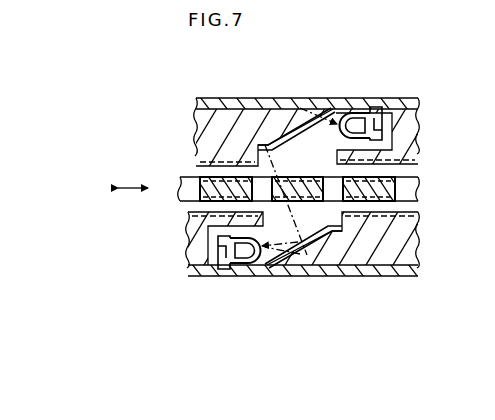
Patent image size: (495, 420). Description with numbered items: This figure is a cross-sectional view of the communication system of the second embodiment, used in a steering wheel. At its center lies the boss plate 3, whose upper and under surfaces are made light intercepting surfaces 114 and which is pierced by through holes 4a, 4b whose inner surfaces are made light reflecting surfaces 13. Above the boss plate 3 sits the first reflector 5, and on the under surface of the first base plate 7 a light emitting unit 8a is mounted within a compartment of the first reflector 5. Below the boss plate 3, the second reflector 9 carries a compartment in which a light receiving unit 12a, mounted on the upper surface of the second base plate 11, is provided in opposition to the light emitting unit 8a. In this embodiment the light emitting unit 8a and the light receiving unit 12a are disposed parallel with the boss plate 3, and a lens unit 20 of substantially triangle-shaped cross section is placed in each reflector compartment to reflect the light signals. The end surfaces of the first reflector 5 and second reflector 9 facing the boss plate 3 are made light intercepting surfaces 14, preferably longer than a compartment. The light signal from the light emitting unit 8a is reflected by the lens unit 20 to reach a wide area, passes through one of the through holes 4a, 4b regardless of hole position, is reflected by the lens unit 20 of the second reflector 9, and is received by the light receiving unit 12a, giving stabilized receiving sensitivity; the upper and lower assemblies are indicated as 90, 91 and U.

The boss plate 3 is at (412, 187).
The first reflector 5 is at (410, 135).
The first base plate 7 is at (405, 99).
The light emitting unit 8a is at (353, 109).
The second reflector 9 is at (410, 244).
The second base plate 11 is at (388, 276).
The light receiving unit 12a is at (242, 262).
The light reflecting surface 13 is at (326, 203).
The light intercepting surface 14 is at (201, 163).
The light intercepting surface 114 is at (200, 176).
The lens unit 20 is at (270, 101).
The through hole 4a is at (286, 167).
The through hole 4b is at (316, 167).
The upper unit 90 is at (329, 69).
The lower unit 91 is at (237, 309).
The unit U is at (356, 74).